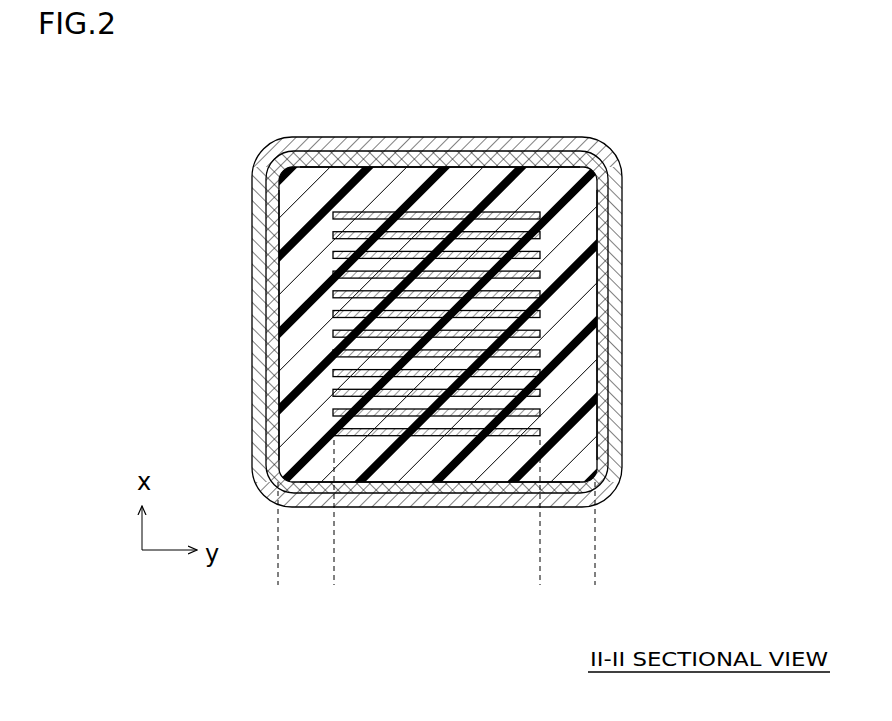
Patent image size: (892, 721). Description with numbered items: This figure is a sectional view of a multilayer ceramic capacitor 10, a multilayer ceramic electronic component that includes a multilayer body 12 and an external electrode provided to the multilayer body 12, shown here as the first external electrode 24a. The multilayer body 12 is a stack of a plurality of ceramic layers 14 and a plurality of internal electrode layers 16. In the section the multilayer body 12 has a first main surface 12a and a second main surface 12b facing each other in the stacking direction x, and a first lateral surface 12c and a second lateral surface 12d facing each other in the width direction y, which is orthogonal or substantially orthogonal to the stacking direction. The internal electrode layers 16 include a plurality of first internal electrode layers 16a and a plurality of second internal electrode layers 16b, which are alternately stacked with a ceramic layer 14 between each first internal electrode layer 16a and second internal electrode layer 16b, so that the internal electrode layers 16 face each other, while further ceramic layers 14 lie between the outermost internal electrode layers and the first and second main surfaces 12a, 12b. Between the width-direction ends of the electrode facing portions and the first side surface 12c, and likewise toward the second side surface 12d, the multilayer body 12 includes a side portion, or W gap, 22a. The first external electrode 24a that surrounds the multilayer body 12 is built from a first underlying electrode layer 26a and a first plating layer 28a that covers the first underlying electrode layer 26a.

The multilayer ceramic capacitor 10 is at (208, 127).
The multilayer body 12 is at (446, 312).
The first main surface 12a is at (334, 166).
The second main surface 12b is at (369, 484).
The first lateral surface 12c is at (282, 300).
The second lateral surface 12d is at (598, 323).
The ceramic layer 14 is at (481, 286).
The internal electrode layer 16 is at (461, 324).
The first internal electrode layer 16a is at (333, 294).
The second internal electrode layer 16b is at (541, 314).
The side portion (W gap) 22a is at (334, 585).
The first external electrode 24a is at (515, 322).
The first underlying electrode layer 26a is at (603, 214).
The first plating layer 28a is at (616, 230).